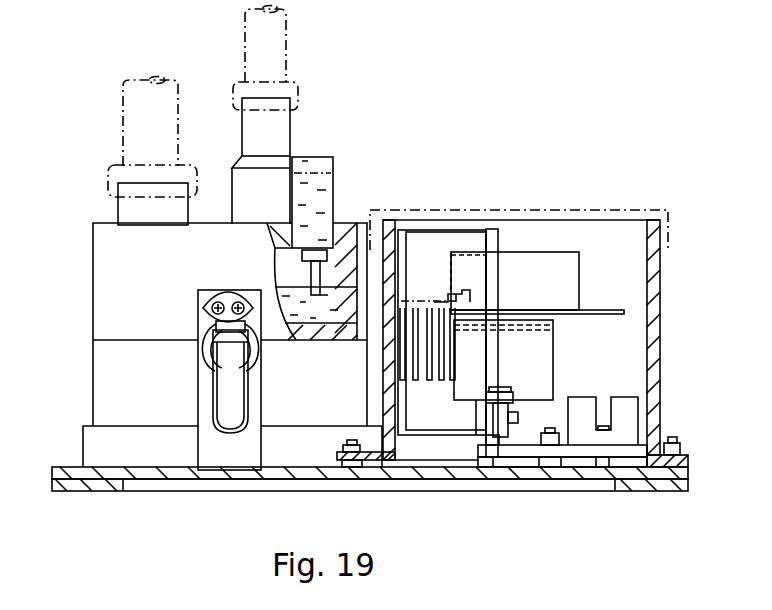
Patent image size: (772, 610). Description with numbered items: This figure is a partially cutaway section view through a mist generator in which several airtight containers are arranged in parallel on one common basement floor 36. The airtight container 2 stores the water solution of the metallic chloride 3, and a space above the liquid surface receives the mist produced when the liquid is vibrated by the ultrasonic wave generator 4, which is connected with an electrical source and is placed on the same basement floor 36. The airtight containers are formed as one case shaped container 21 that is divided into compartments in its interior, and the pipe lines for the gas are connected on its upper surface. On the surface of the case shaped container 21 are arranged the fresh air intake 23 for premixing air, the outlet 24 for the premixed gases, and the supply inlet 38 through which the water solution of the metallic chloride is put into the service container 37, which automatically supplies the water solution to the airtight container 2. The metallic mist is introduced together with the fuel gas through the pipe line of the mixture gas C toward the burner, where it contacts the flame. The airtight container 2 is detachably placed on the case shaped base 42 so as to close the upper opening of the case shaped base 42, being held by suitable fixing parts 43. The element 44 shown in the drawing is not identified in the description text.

The pipe line of the mixture gas C is at (290, 47).
The fresh air intake 23 is at (238, 183).
The outlet 24 is at (128, 212).
The service container 37 is at (333, 182).
The supply inlet 38 is at (326, 233).
The airtight container 2 is at (283, 272).
The water-soluble metallic chloride 3 is at (326, 318).
The case shaped container 21 is at (103, 296).
The case shaped base 42 is at (103, 377).
The basement floor 36 is at (58, 478).
The fixing parts 43 is at (236, 392).
The ultrasonic wave generator 4 is at (606, 310).
The motor 44 is at (543, 363).